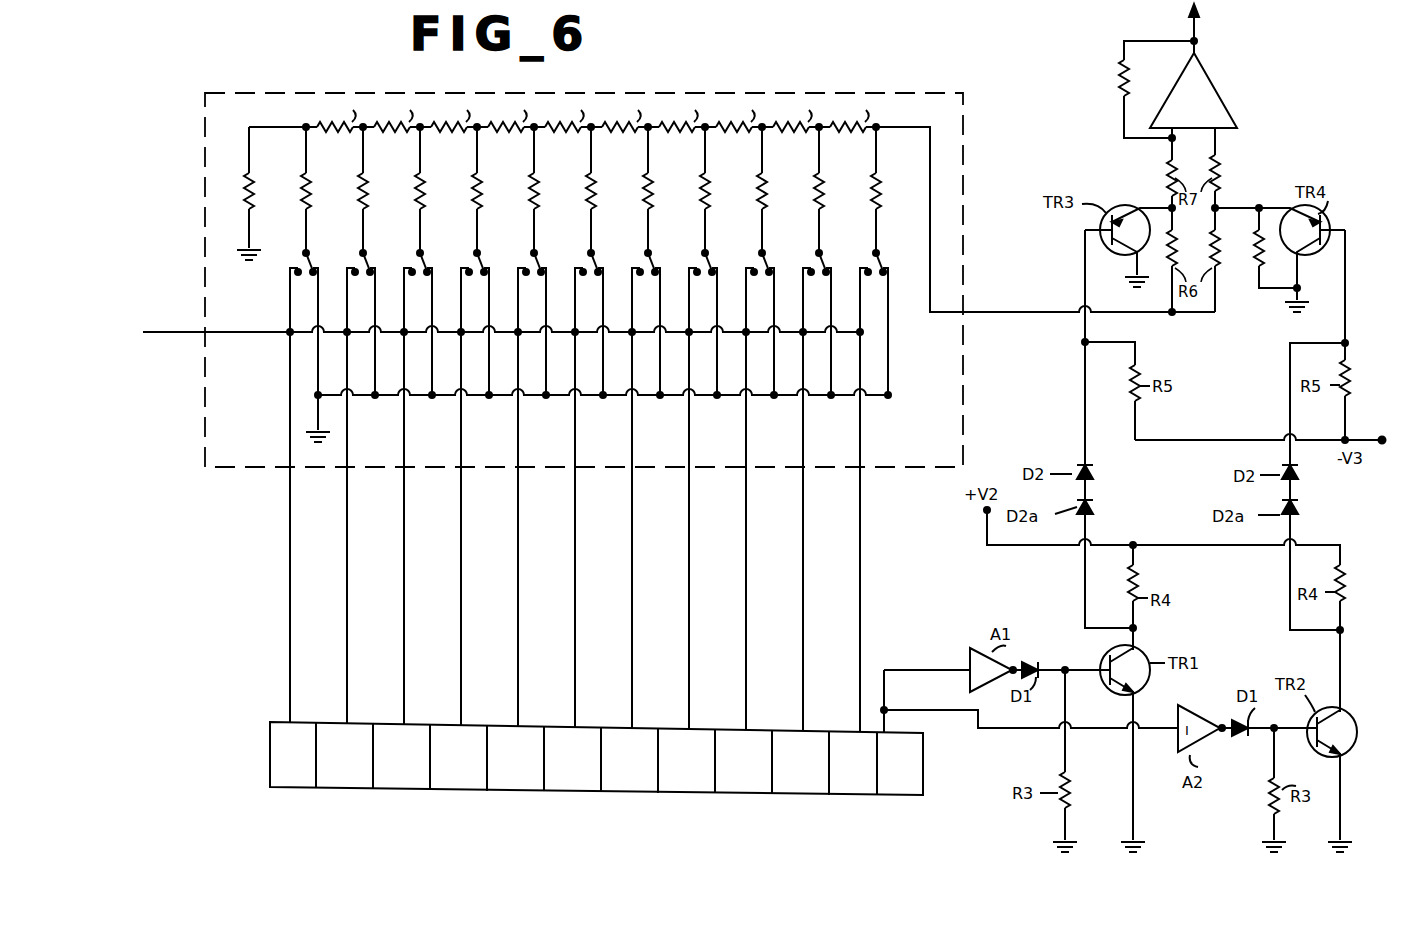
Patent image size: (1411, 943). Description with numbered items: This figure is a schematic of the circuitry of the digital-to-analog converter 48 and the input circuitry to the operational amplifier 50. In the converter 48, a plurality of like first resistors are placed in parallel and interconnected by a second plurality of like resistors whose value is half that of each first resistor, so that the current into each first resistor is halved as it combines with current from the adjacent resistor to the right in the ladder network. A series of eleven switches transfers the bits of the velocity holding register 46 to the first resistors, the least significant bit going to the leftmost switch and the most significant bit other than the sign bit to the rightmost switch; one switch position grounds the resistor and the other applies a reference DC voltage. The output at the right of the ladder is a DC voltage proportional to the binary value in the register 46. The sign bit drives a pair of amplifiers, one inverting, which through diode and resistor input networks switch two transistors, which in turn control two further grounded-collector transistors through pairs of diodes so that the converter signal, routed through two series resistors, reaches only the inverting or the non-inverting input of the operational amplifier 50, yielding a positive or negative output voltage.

The velocity holding register 46 is at (270, 754).
The digital-to-analog converter 48 is at (205, 379).
The operational amplifier 50 is at (1207, 75).